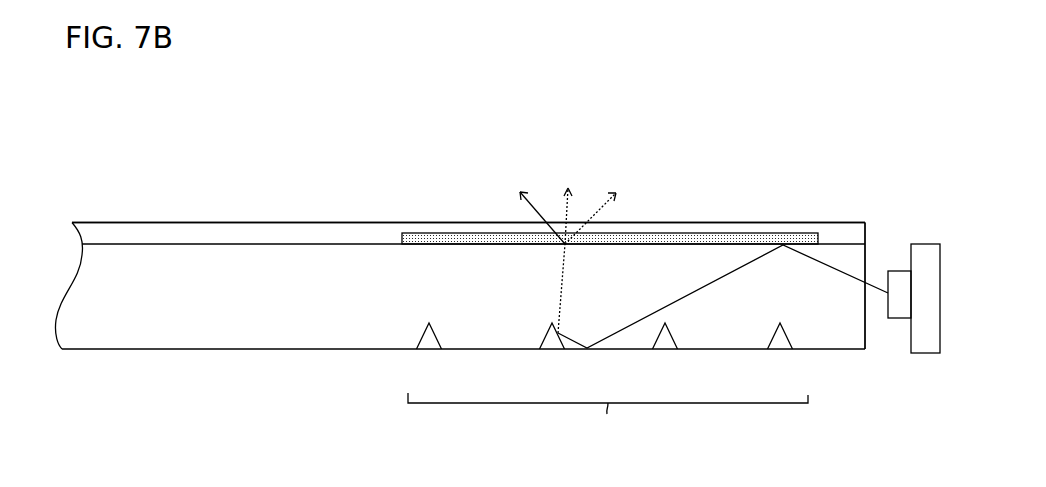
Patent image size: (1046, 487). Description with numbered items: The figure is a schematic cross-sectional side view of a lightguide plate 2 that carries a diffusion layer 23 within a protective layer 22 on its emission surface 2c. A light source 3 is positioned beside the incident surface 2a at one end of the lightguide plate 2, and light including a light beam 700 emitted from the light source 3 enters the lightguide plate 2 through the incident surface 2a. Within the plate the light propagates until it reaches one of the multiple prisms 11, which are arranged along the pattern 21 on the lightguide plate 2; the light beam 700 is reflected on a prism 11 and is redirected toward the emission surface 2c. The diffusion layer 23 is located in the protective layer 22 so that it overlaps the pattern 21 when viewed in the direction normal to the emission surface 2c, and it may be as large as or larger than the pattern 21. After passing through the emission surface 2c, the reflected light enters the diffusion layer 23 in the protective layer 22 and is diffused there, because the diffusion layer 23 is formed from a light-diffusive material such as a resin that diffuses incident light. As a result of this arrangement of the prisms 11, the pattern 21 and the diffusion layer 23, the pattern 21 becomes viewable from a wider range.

The lightguide plate 2 is at (247, 337).
The incident surface 2a is at (880, 330).
The emission surface 2c is at (232, 244).
The light source 3 is at (926, 342).
The prisms 11 is at (553, 340).
The pattern 21 is at (608, 422).
The protective layer 22 is at (867, 235).
The diffusion layer 23 is at (740, 240).
The light beam 700 is at (563, 275).